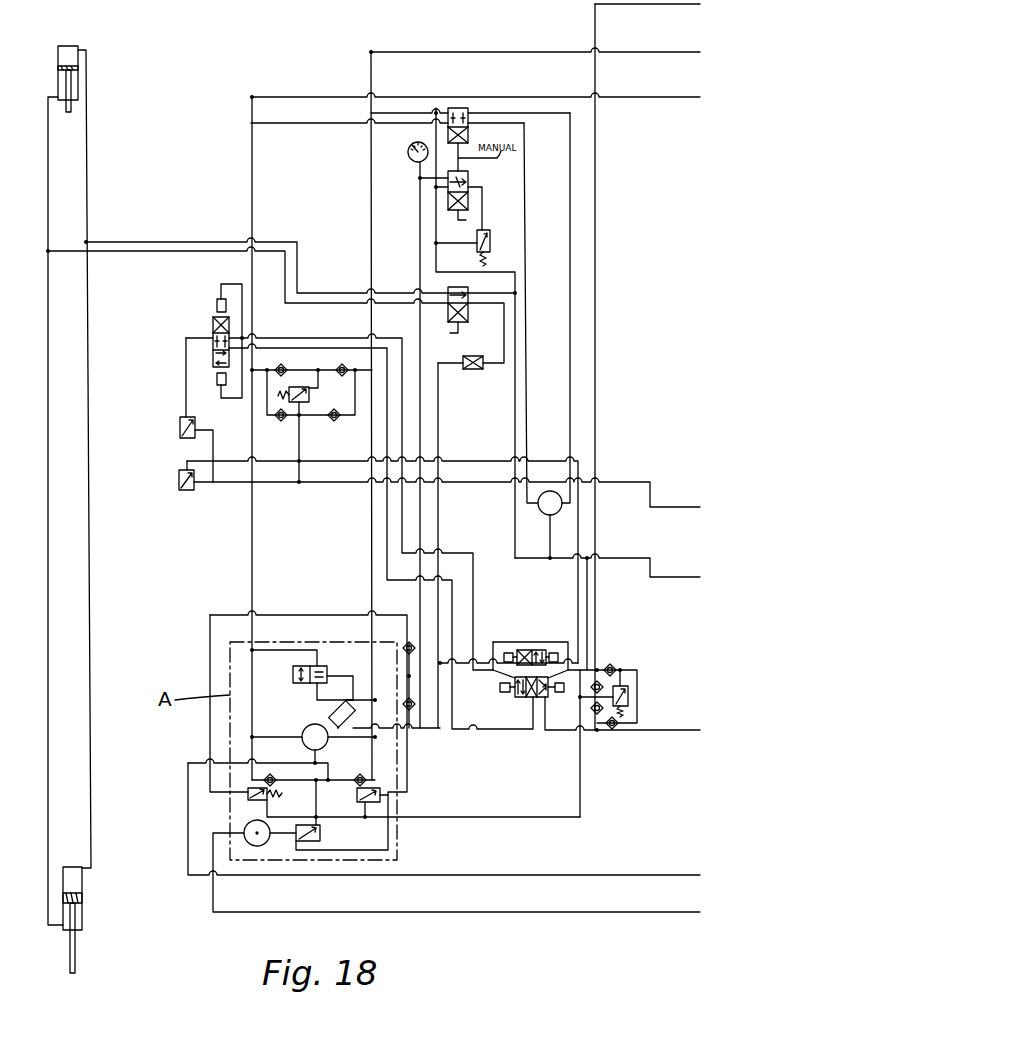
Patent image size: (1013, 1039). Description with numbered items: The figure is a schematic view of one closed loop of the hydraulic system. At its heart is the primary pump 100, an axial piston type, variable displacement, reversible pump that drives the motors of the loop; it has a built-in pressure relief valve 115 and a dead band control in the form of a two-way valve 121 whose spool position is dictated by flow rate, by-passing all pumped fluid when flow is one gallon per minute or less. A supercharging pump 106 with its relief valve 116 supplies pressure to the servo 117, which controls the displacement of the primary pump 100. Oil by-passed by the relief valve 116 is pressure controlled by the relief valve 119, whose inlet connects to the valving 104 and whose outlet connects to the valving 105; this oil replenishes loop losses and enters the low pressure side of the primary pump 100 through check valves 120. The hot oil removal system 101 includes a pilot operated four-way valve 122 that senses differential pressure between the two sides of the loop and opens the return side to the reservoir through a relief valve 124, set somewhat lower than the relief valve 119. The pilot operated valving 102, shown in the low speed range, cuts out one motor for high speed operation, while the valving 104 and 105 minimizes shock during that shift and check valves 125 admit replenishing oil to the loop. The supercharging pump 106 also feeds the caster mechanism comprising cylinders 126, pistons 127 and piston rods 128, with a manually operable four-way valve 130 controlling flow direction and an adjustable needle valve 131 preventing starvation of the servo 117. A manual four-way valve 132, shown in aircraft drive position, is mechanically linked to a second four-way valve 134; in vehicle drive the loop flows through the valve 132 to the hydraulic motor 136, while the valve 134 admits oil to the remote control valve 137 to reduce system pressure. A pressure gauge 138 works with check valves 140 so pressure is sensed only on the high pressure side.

The primary pump 100 is at (328, 742).
The hot oil removal system 101 is at (178, 341).
The valving 102 is at (542, 634).
The valving 104 is at (614, 727).
The valving 105 is at (280, 418).
The supercharging pump 106 is at (259, 847).
The pressure relief valve 115 is at (259, 800).
The relief valve 116 is at (321, 837).
The servo 117 is at (330, 714).
The relief valve 119 is at (180, 486).
The check valve 120 is at (274, 785).
The two-way valve 121 is at (293, 673).
The pilot operated four-way valve 122 is at (213, 345).
The relief valve 124 is at (180, 430).
The check valve 125 is at (591, 688).
The cylinder 126 is at (77, 46).
The piston 127 is at (58, 69).
The piston rod 128 is at (67, 113).
The manually operable four-way valve 130 is at (467, 310).
The adjustable needle valve 131 is at (482, 369).
The manual four-way valve 132 is at (469, 112).
The second four-way valve 134 is at (455, 203).
The hydraulic motor 136 is at (548, 515).
The remote control valve 137 is at (514, 224).
The pressure gauge 138 is at (408, 158).
The check valve 140 is at (409, 677).